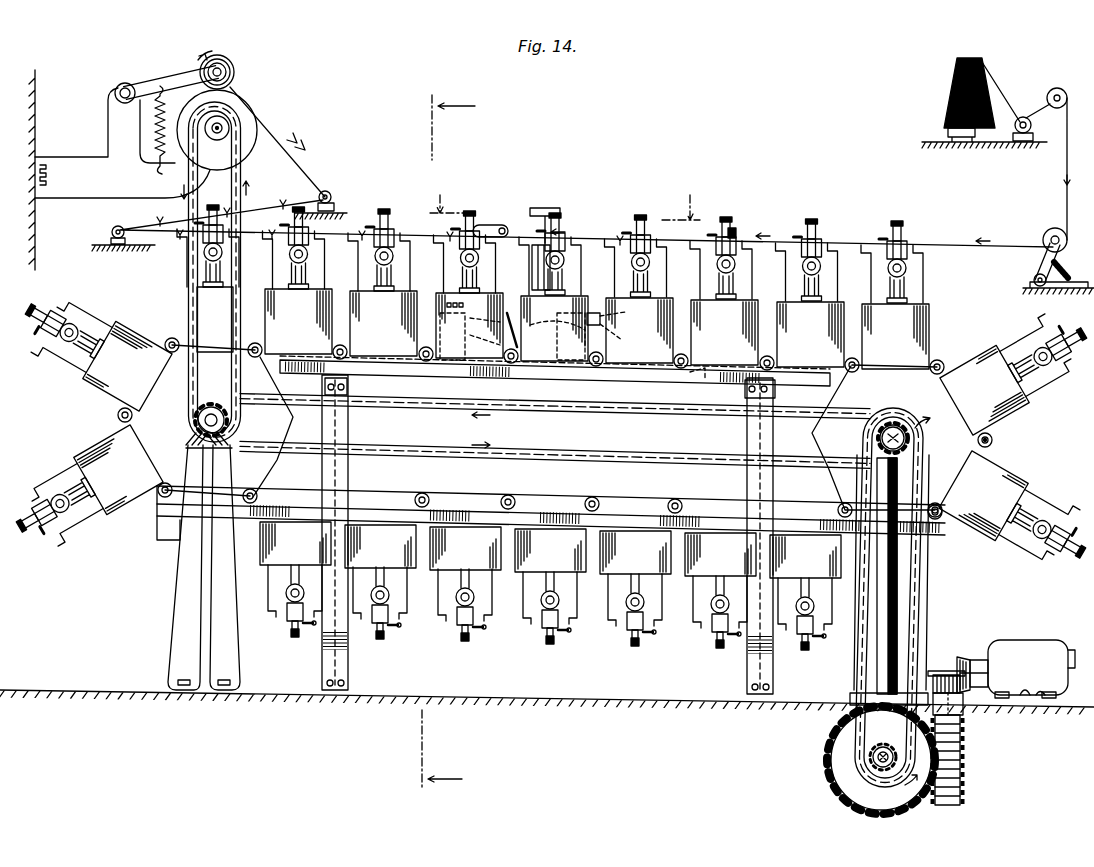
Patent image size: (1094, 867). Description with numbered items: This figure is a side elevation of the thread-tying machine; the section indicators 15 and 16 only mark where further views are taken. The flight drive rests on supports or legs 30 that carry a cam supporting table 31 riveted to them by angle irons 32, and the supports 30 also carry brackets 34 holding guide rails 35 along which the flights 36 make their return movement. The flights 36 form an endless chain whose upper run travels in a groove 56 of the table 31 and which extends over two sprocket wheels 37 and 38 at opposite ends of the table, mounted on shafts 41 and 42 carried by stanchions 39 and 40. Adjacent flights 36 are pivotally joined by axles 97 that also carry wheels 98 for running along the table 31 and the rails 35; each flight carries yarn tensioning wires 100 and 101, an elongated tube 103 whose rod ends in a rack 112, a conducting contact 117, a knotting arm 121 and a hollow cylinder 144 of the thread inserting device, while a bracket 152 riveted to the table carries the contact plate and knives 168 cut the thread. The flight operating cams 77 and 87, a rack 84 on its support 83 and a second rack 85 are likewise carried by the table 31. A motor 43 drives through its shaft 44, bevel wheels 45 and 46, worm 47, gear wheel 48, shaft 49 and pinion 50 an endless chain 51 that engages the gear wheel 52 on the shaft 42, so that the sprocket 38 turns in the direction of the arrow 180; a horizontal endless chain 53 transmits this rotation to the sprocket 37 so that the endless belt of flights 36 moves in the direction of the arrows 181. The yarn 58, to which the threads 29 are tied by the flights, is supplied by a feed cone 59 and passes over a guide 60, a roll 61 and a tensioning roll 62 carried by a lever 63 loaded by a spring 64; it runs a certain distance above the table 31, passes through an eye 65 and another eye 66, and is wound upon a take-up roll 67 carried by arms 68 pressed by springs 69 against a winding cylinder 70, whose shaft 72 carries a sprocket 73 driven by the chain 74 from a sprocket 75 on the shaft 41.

The section line 15- 15 is at (431, 443).
The section line 16- 16 is at (566, 198).
The threads 29 is at (285, 138).
The supports or legs 30 is at (326, 660).
The cam supporting table 31 is at (416, 381).
The angle irons 32 is at (745, 392).
The brackets 34 is at (787, 551).
The guide rails 35 is at (474, 508).
The flights 36 is at (131, 336).
The sprocket wheel 37 is at (150, 396).
The sprocket wheel 38 is at (924, 370).
The stanchions or pillow blocks 39 is at (183, 622).
The stanchions or pillow blocks 40 is at (906, 592).
The shaft 41 is at (204, 432).
The shaft 42 is at (893, 426).
The motor 43 is at (1030, 646).
The motor shaft 44 is at (980, 660).
The bevel wheel 45 is at (963, 657).
The bevel wheel 46 is at (945, 672).
The worm 47 is at (962, 752).
The gear wheel 48 is at (850, 801).
The shaft 49 is at (879, 760).
The pinion 50 is at (872, 751).
The endless chain 51 is at (862, 676).
The gear wheel 52 is at (907, 442).
The horizontal endless chain 53 is at (441, 457).
The parallel groove 56 is at (700, 380).
The yarn 58 is at (308, 162).
The feed cone 59 is at (952, 76).
The guide 60 is at (1023, 117).
The roll 61 is at (1060, 88).
The tensioning roll 62 is at (1050, 229).
The lever 63 is at (1033, 266).
The spring 64 is at (1066, 270).
The eye 65 is at (112, 228).
The eye 66 is at (328, 192).
The take-up roll 67 is at (226, 60).
The arms 68 is at (182, 76).
The springs 69 is at (155, 118).
The winding cylinder 70 is at (233, 100).
The shaft 72 is at (229, 125).
The sprocket 73 is at (236, 133).
The endless chain drive 74 is at (186, 256).
The sprocket 75 is at (212, 404).
The cam 77 is at (624, 328).
The support 83 is at (440, 338).
The rack 84 is at (440, 318).
The second rack 85 is at (598, 347).
The second cam 87 is at (500, 347).
The pins or axles 97 is at (989, 447).
The wheels 98 is at (168, 340).
The yarn tensioning wire 100 is at (358, 258).
The yarn tensioning wire 101 is at (411, 258).
The elongated tube 103 is at (736, 226).
The rack 112 is at (382, 222).
The conducting contact 117 is at (628, 232).
The knotting arm 121 is at (496, 221).
The hollow cylinder 144 is at (566, 262).
The bracket 152 is at (397, 283).
The knives 168 is at (546, 210).
The arrow 180 is at (939, 415).
The arrows 181 is at (482, 447).